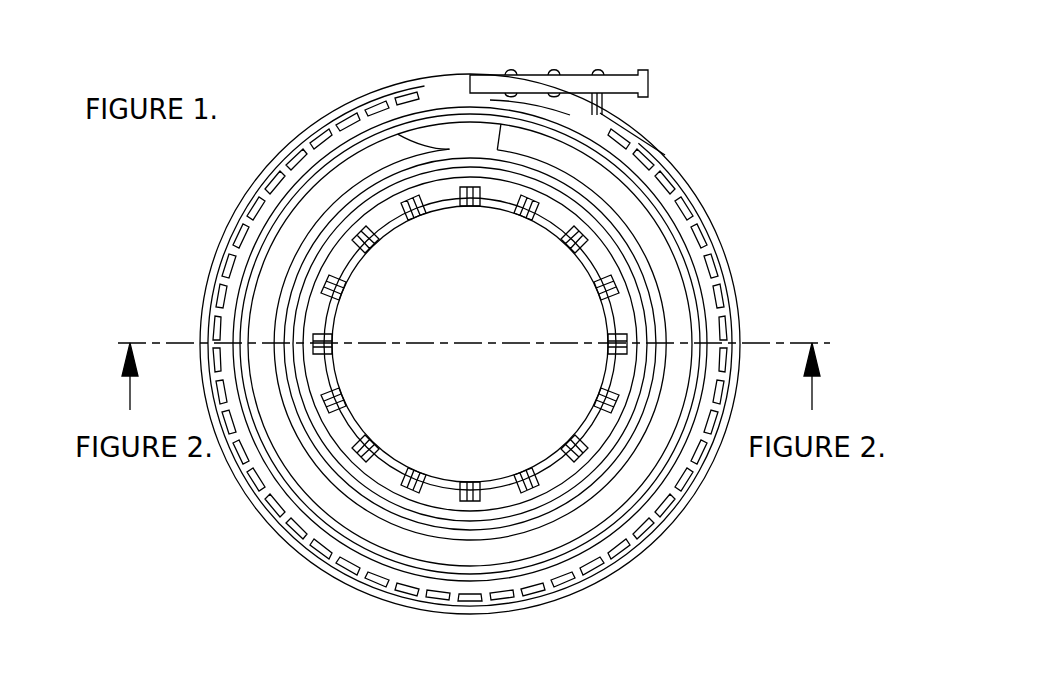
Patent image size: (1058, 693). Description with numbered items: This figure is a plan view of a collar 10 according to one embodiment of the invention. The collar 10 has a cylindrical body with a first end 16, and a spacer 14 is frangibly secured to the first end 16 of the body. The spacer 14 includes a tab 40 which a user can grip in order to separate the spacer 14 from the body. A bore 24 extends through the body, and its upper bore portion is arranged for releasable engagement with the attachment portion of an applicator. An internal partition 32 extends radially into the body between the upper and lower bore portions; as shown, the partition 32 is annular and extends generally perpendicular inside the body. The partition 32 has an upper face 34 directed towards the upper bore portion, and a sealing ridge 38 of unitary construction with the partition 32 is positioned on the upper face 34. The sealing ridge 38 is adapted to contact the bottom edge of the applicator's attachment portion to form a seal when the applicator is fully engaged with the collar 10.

The collar 10 is at (834, 105).
The spacer 14 is at (244, 213).
The first end 16 is at (685, 220).
The bore 24 is at (520, 393).
The internal partition 32 is at (345, 434).
The upper face 34 is at (318, 313).
The sealing ridge 38 is at (648, 305).
The tab 40 is at (577, 85).